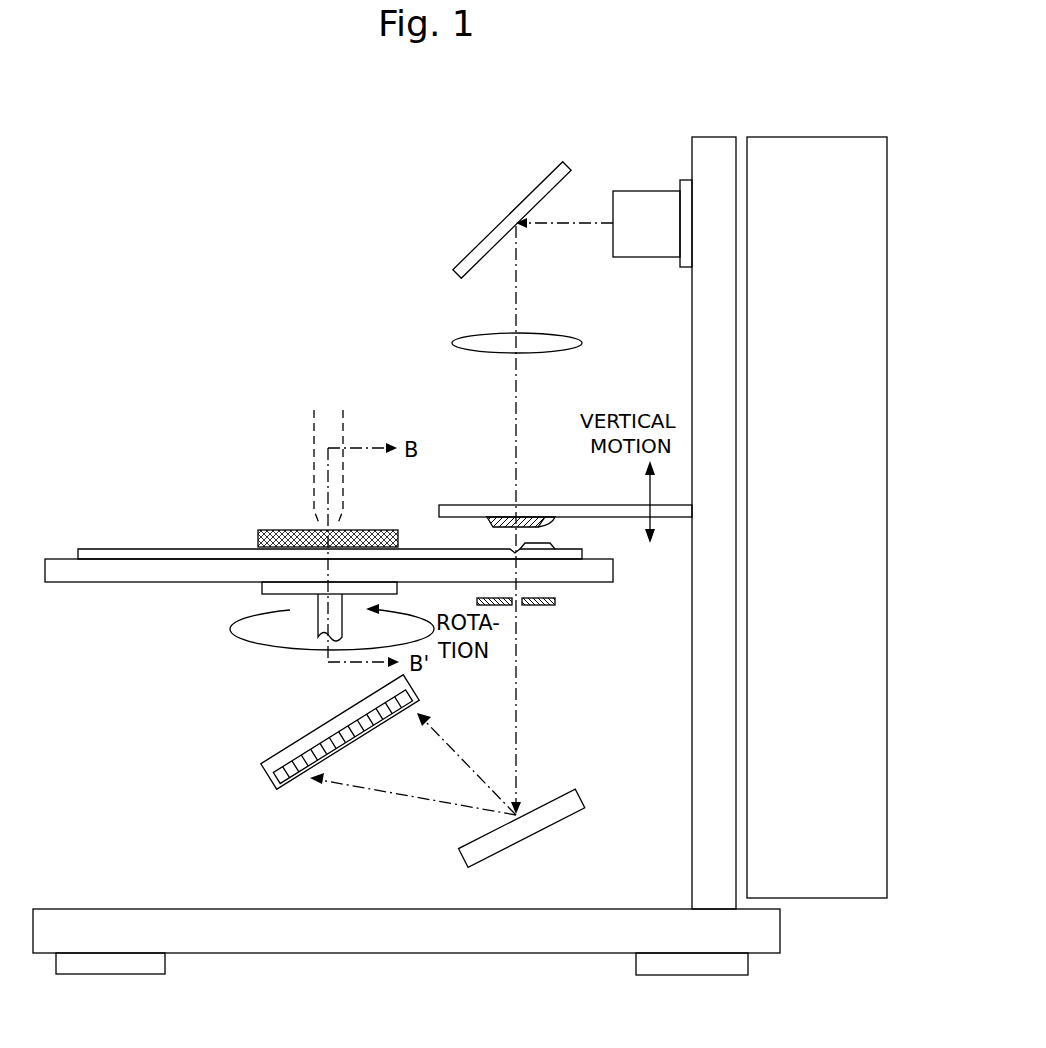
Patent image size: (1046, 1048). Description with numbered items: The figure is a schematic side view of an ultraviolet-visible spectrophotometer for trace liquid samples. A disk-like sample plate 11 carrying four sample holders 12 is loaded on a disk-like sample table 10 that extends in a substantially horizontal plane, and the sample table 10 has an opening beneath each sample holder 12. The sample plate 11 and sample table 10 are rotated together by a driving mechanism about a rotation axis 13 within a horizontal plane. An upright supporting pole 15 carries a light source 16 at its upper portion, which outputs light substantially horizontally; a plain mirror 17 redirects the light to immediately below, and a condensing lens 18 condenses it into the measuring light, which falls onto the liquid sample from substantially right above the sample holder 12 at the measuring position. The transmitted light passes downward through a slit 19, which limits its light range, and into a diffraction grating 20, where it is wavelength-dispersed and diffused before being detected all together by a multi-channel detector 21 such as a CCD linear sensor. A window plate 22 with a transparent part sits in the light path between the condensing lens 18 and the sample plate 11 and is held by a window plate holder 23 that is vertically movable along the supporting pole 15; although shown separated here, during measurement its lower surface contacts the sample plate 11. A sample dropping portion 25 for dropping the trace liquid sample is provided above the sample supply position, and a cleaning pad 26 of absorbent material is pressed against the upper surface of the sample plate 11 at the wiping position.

The sample table 10 is at (75, 582).
The sample plate 11 is at (102, 548).
The sample holder 12 is at (553, 545).
The rotation axis 13 is at (318, 615).
The supporting pole 15 is at (715, 136).
The light source 16 is at (641, 191).
The plain mirror 17 is at (537, 183).
The condensing lens 18 is at (462, 335).
The slit 19 is at (547, 607).
The diffraction grating 20 is at (537, 830).
The multi-channel detector 21 is at (267, 775).
The window plate 22 is at (557, 525).
The window plate holder 23 is at (468, 505).
The sample dropping portion 25 is at (312, 423).
The cleaning pad 26 is at (258, 537).